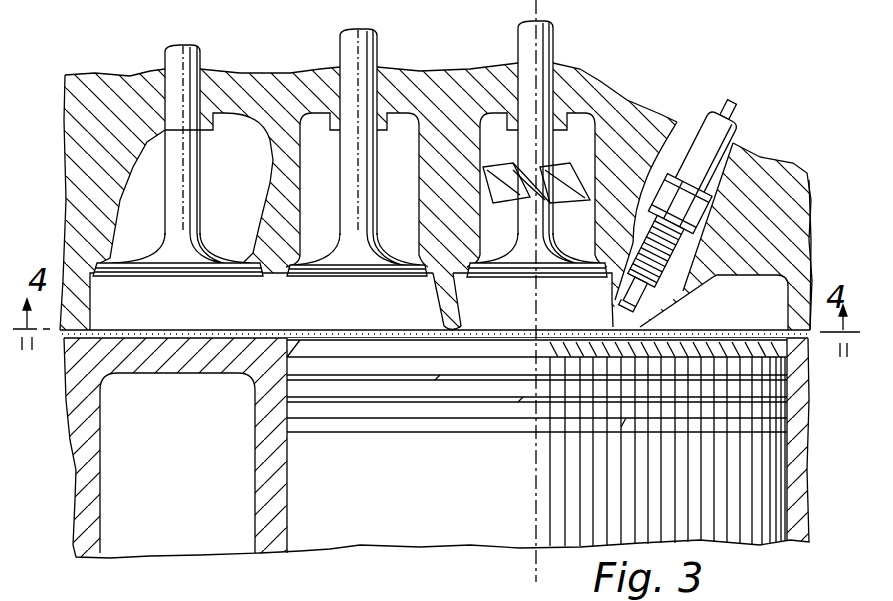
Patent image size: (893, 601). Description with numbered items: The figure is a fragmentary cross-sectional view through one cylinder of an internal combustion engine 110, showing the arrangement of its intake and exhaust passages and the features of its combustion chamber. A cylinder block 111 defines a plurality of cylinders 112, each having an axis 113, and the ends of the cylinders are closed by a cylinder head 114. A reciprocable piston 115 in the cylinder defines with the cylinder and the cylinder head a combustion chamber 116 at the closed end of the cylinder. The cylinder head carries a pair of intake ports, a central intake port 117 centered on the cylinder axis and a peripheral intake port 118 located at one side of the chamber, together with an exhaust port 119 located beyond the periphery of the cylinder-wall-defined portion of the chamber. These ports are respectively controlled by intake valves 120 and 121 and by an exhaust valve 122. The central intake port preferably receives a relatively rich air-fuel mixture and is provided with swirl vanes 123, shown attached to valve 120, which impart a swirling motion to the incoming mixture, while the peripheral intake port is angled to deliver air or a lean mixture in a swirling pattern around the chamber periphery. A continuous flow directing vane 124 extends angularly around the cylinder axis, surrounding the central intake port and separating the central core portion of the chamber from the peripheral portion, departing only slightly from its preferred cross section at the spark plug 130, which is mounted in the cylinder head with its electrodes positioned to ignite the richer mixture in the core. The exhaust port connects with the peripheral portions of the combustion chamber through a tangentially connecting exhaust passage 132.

The internal combustion engine 110 is at (807, 165).
The cylinder block 111 is at (803, 400).
The cylinder 112 is at (780, 485).
The cylinder axis 113 is at (535, 485).
The cylinder head 114 is at (790, 230).
The piston 115 is at (760, 457).
The combustion chamber 116 is at (770, 290).
The central intake port 117 is at (593, 128).
The peripheral intake port 118 is at (402, 123).
The exhaust port 119 is at (247, 130).
The intake valve 120 is at (558, 148).
The intake valve 121 is at (372, 44).
The exhaust valve 122 is at (200, 53).
The swirl vanes 123 is at (575, 172).
The flow directing vane 124 is at (447, 308).
The spark plug 130 is at (680, 208).
The tangentially connecting exhaust passage 132 is at (248, 313).